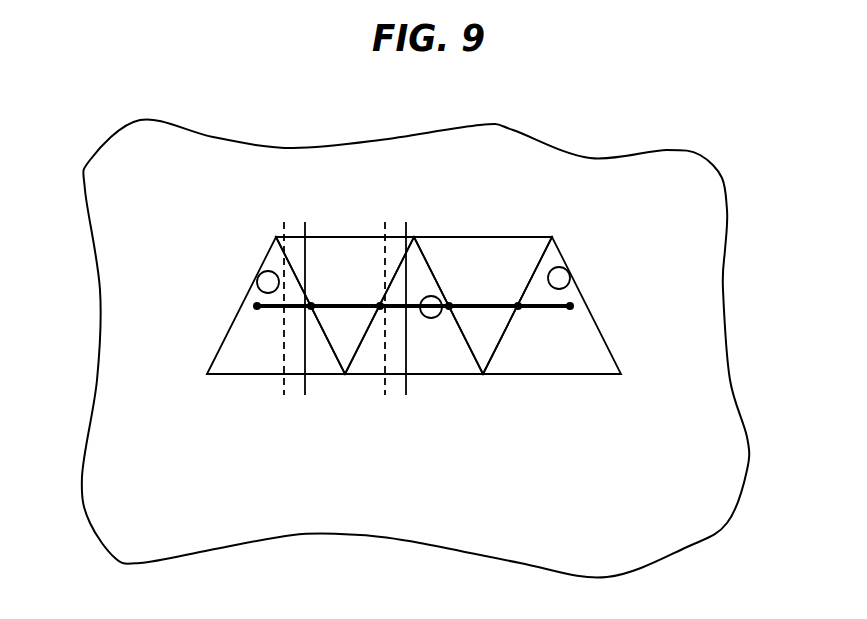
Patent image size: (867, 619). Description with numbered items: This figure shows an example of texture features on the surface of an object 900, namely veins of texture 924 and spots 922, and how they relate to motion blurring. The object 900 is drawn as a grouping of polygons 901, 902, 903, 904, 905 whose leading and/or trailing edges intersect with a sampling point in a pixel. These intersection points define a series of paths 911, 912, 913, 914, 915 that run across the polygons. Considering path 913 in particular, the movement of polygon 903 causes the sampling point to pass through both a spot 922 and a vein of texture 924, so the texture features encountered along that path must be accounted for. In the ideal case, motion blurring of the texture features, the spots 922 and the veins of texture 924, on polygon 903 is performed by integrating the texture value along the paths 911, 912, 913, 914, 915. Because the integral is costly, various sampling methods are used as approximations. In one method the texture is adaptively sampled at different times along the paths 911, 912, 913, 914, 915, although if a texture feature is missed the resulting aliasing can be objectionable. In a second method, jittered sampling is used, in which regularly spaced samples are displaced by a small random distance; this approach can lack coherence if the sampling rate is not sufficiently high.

The object 900 is at (575, 152).
The polygon 901 is at (325, 363).
The polygon 902 is at (340, 236).
The polygon 903 is at (432, 367).
The polygon 904 is at (478, 237).
The polygon 905 is at (590, 365).
The path 911 is at (262, 311).
The path 912 is at (353, 302).
The path 913 is at (422, 315).
The path 914 is at (478, 304).
The path 915 is at (527, 312).
The spot 922 is at (257, 283).
The vein of texture 924 is at (296, 414).